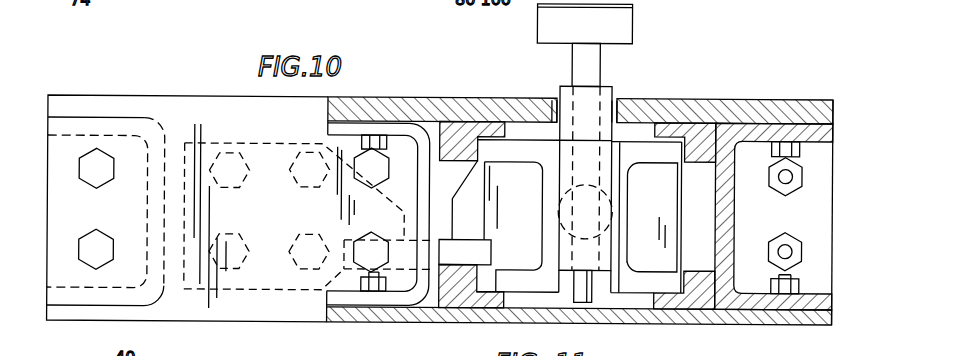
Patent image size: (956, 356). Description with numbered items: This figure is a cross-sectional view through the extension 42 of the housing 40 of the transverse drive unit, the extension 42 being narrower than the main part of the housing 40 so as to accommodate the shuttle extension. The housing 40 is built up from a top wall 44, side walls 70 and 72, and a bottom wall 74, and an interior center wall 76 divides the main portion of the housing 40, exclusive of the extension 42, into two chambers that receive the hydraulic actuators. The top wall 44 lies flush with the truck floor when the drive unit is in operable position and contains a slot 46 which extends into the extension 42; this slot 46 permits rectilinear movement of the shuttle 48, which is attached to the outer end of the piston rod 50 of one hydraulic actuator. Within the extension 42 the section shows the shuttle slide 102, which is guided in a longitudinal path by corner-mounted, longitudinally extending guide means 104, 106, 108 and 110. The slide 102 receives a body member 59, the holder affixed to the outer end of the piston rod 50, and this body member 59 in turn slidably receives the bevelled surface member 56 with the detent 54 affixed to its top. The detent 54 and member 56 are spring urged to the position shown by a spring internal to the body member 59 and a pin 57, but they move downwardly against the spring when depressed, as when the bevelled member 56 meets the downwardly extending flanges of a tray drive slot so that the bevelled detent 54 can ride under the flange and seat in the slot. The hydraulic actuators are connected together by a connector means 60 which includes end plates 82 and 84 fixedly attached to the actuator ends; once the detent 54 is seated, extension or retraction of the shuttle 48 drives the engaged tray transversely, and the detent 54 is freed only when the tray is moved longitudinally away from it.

The housing 40 is at (161, 87).
The extension 42 is at (755, 95).
The top wall 44 is at (203, 104).
The slot 46 is at (560, 94).
The shuttle 48 is at (562, 54).
The piston rod 50 is at (560, 210).
The detent 54 is at (637, 20).
The bevelled surface member 56 is at (602, 94).
The pin 57 is at (590, 290).
The body member 59 is at (583, 175).
The connector means 60 is at (487, 223).
The side wall 70 is at (152, 209).
The side wall 72 is at (732, 218).
The bottom wall 74 is at (207, 309).
The interior center wall 76 is at (430, 160).
The end plate 82 is at (266, 271).
The end plate 84 is at (665, 225).
The shuttle slide 102 is at (628, 223).
The guide means 104 is at (467, 132).
The guide means 106 is at (693, 129).
The guide means 108 is at (470, 290).
The guide means 110 is at (697, 288).